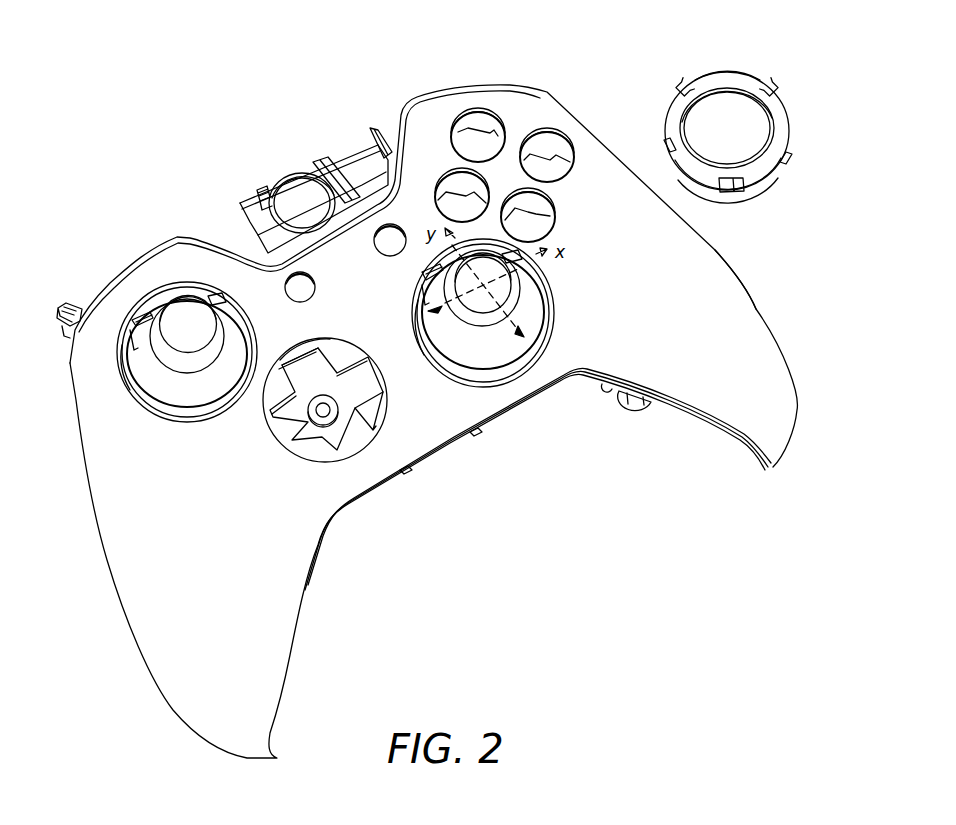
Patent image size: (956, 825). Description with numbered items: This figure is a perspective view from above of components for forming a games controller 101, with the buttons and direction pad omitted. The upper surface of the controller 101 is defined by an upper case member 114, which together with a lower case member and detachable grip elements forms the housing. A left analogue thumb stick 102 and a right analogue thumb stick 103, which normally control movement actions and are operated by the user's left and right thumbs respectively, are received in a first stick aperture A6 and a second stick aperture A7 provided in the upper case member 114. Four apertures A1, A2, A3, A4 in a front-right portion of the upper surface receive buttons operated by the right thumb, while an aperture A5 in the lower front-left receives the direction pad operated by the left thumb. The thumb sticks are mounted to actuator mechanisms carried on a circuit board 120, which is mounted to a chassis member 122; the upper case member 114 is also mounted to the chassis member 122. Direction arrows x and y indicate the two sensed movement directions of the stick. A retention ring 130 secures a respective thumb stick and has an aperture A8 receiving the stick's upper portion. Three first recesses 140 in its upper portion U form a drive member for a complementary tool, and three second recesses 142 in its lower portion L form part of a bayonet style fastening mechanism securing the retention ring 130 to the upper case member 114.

The controller 101 is at (163, 115).
The left analogue thumb stick 102 is at (178, 320).
The right analogue thumb stick 103 is at (470, 313).
The upper case member 114 is at (752, 302).
The circuit board 120 is at (363, 170).
The chassis member 122 is at (256, 198).
The retention ring 130 is at (722, 80).
The first recesses 140 is at (676, 100).
The second recesses 142 is at (667, 155).
The aperture A1 is at (483, 127).
The aperture A2 is at (548, 150).
The aperture A3 is at (456, 190).
The aperture A4 is at (548, 222).
The aperture A5 is at (343, 438).
The first stick aperture A6 is at (130, 312).
The second stick aperture A7 is at (540, 307).
The aperture A8 is at (738, 103).
The upper portion U is at (700, 82).
The lower portion L is at (684, 186).